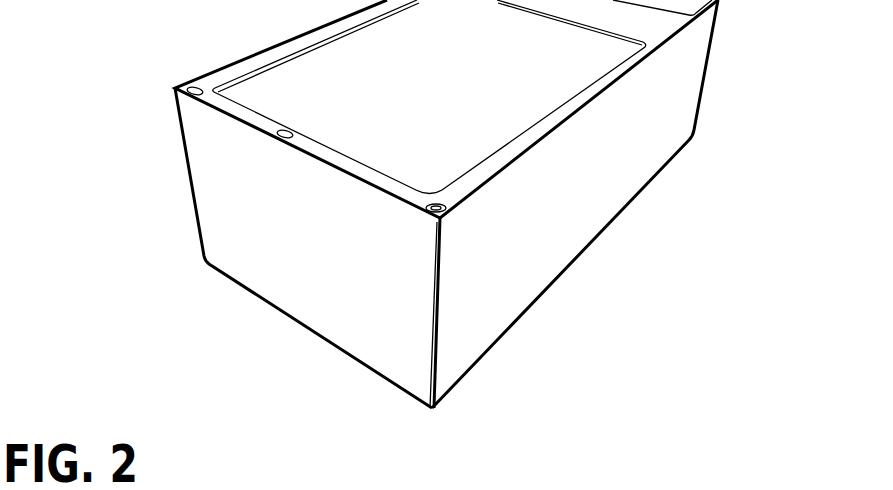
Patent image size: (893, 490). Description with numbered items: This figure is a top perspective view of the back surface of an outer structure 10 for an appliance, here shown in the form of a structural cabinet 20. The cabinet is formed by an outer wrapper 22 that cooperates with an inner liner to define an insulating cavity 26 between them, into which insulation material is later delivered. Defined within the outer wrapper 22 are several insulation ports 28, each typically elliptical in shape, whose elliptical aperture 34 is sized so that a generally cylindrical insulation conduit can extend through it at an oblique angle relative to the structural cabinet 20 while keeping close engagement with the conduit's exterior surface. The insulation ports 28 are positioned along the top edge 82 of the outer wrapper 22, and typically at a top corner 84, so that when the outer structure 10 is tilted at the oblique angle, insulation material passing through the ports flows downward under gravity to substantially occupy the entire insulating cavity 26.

The outer structure 10 is at (435, 219).
The structural cabinet 20 is at (398, 219).
The outer wrapper 22 is at (482, 317).
The insulating cavity 26 is at (345, 315).
The insulation port 28 is at (270, 142).
The elliptical aperture 34 is at (430, 212).
The top edge 82 is at (237, 120).
The top corner 84 is at (442, 224).